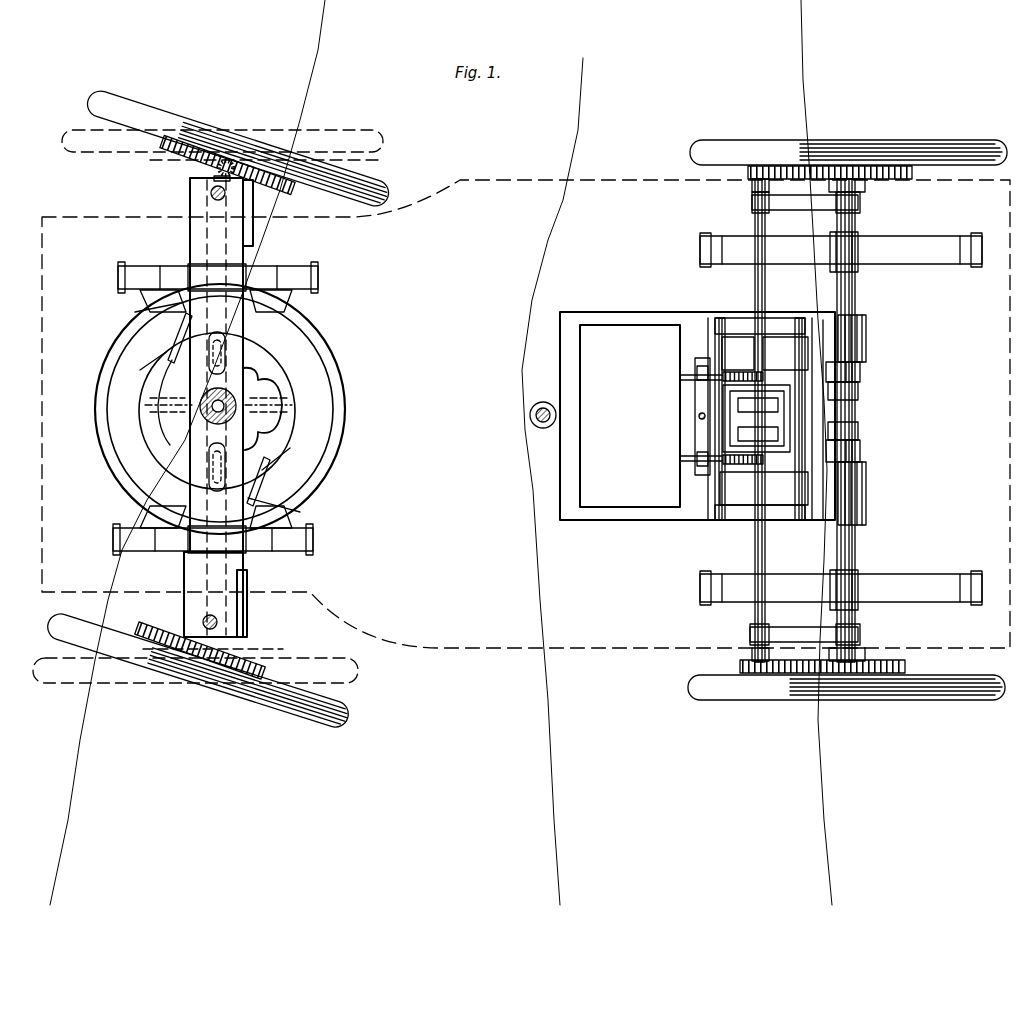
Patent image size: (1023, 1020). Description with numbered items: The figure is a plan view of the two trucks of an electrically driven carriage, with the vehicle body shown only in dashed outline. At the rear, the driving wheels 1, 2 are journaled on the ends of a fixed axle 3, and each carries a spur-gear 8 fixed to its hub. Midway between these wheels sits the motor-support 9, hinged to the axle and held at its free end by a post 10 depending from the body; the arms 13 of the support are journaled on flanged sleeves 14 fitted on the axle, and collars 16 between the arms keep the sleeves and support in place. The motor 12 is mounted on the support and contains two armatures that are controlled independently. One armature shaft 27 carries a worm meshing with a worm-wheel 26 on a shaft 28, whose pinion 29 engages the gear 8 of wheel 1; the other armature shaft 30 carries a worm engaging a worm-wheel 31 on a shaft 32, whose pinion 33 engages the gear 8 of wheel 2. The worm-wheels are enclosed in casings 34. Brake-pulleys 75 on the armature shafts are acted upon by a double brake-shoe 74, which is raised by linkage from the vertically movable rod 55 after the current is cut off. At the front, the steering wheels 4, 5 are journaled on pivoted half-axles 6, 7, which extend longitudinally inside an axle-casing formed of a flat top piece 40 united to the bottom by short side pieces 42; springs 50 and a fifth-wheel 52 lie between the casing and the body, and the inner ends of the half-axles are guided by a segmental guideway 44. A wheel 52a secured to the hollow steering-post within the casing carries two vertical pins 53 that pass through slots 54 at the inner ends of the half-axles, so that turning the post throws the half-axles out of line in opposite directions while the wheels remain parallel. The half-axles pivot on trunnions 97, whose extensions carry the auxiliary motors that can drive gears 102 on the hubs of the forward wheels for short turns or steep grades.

The rear driving wheel 1 is at (758, 415).
The rear driving wheel 2 is at (790, 698).
The fixed axle 3 is at (858, 546).
The forward steering wheel 4 is at (398, 208).
The forward steering wheel 5 is at (350, 702).
The pivoted half-axle 6 is at (135, 312).
The pivoted half-axle 7 is at (300, 504).
The spur-gear 8 is at (903, 180).
The motor-support 9 is at (624, 520).
The post 10 is at (533, 425).
The motor 12 is at (630, 416).
The arms of the motor-support 13 is at (866, 332).
The flanged sleeves 14 is at (862, 376).
The clamps or collars 16 is at (858, 392).
The worm-wheel 26 is at (732, 372).
The armature-shaft 27 is at (680, 380).
The shaft 28 is at (768, 286).
The pinion 29 is at (754, 165).
The armature-shaft 30 is at (680, 462).
The worm-wheel 31 is at (740, 478).
The shaft 32 is at (762, 548).
The pinion 33 is at (742, 674).
The casings 34 is at (778, 372).
The top piece of axle-casing 40 is at (188, 572).
The side pieces 42 is at (247, 608).
The upper segmental guideway 44 is at (248, 318).
The springs 50 is at (318, 280).
The fifth-wheel 52 is at (338, 432).
The wheel 52a is at (292, 420).
The vertical pins 53 is at (140, 370).
The slots 54 is at (176, 340).
The rod 55 is at (235, 395).
The double brake-shoe 74 is at (695, 430).
The brake-pulleys 75 is at (702, 364).
The trunnions 97 is at (210, 194).
The gears 102 is at (268, 188).